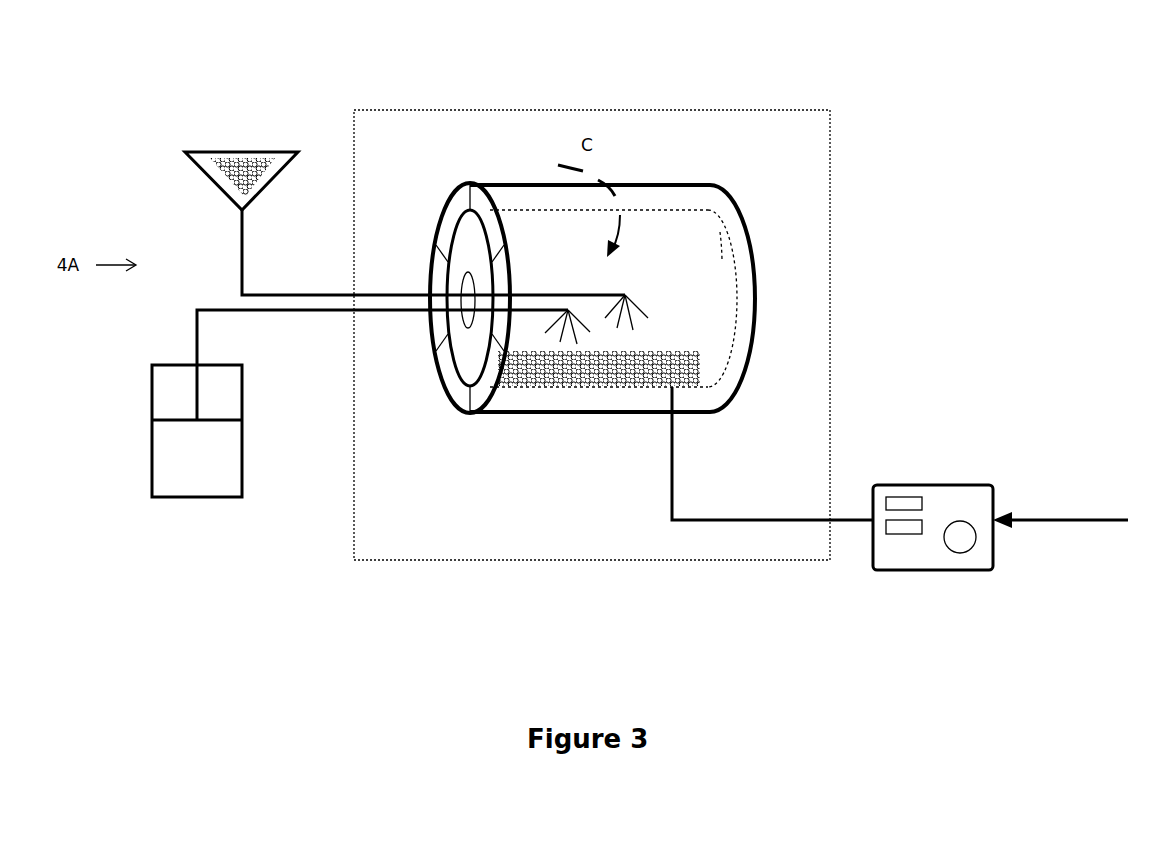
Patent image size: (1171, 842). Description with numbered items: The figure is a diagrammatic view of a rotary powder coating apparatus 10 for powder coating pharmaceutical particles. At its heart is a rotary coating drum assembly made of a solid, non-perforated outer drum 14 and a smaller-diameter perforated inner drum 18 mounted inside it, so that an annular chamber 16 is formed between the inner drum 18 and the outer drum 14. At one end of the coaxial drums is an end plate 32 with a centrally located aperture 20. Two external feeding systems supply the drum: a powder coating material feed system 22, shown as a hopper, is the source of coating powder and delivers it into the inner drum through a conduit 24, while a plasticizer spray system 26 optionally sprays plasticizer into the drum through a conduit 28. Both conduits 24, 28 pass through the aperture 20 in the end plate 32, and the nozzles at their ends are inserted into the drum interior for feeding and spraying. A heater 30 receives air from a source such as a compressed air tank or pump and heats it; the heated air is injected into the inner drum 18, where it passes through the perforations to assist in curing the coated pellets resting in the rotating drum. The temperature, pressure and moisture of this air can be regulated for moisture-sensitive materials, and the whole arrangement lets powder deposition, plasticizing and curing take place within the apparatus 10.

The powder coating apparatus 10 is at (892, 106).
The solid outer drum 14 is at (652, 185).
The chamber 16 is at (672, 205).
The perforated inner drum 18 is at (718, 240).
The aperture 20 is at (433, 373).
The powder coating material feed system 22 is at (243, 150).
The conduit 24 is at (378, 290).
The plasticizer spray system 26 is at (152, 460).
The conduit 28 is at (263, 312).
The heater 30 is at (972, 484).
The end plate 32 is at (672, 462).